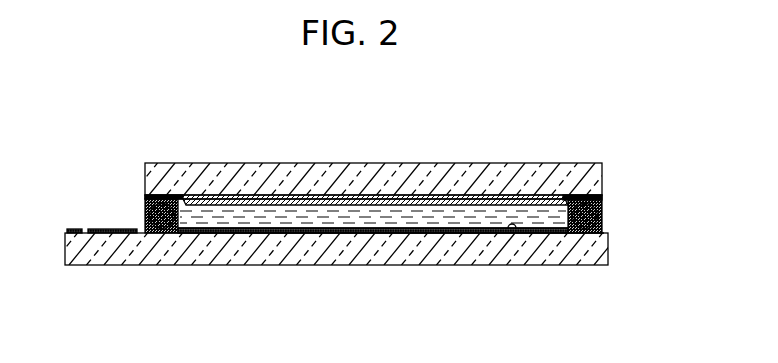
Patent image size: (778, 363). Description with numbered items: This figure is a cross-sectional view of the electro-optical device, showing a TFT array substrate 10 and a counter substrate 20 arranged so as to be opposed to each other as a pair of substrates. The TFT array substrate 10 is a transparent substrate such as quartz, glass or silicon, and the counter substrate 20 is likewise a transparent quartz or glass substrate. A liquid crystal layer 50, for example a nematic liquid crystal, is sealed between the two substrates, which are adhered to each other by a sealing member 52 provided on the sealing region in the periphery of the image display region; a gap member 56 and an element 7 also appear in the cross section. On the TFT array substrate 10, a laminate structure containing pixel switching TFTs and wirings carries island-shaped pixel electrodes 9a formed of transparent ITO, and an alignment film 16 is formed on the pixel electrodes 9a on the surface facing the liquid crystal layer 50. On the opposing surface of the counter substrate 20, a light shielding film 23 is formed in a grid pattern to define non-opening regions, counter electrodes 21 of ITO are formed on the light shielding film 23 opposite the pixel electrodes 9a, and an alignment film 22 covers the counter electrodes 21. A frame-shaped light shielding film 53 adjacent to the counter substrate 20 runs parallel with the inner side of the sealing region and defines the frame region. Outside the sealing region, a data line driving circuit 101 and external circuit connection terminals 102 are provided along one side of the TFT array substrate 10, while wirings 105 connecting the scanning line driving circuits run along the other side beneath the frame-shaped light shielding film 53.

The TFT array substrate 10 is at (417, 257).
The counter substrate 20 is at (313, 170).
The counter electrode 21 is at (499, 200).
The alignment film 22 is at (442, 212).
The light shielding film 23 is at (391, 199).
The frame-shaped light shielding film 53 is at (187, 194).
The sealing member 52 is at (146, 212).
The gap material 56 is at (160, 229).
The alignment film 7 is at (193, 234).
The pixel electrode 9a is at (250, 233).
The liquid crystal layer 50 is at (372, 226).
The alignment film 16 is at (512, 229).
The data line driving circuit 101 is at (108, 228).
The external circuit connection terminals 102 is at (80, 230).
The wirings 105 is at (573, 236).